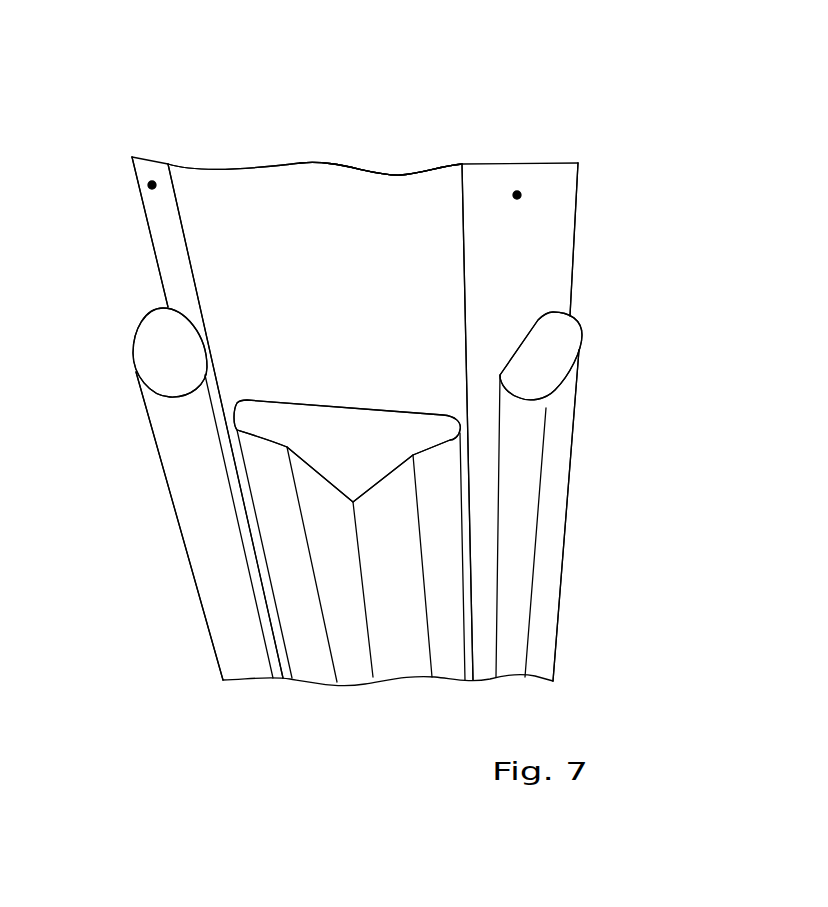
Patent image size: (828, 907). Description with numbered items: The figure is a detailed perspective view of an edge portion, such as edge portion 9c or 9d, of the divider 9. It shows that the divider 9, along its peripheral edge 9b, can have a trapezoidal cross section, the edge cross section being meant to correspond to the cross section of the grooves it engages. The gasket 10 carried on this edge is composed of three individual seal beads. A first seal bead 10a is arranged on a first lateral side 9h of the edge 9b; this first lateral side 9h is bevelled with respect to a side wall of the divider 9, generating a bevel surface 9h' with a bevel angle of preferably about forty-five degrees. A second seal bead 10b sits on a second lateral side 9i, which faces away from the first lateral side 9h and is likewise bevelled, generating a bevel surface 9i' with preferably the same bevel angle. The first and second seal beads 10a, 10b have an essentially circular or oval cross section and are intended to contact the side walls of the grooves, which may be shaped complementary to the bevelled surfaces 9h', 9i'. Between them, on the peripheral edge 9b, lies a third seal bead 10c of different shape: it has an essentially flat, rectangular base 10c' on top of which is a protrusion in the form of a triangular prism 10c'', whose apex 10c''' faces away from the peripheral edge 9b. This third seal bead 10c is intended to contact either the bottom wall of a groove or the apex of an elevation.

The divider 9 is at (425, 127).
The peripheral edge 9b is at (235, 163).
The first edge portion 9c is at (377, 253).
The second edge portion 9d is at (377, 253).
The first lateral side 9h is at (568, 421).
The bevel surface 9h' is at (534, 144).
The second lateral side 9i is at (176, 417).
The bevel surface 9i' is at (143, 129).
The gasket 10 is at (592, 420).
The first seal bead 10a is at (557, 350).
The second seal bead 10b is at (153, 350).
The third seal bead 10c is at (349, 590).
The rectangular base 10c' is at (347, 406).
The triangular prism 10c'' is at (251, 564).
The apex 10c''' is at (355, 641).